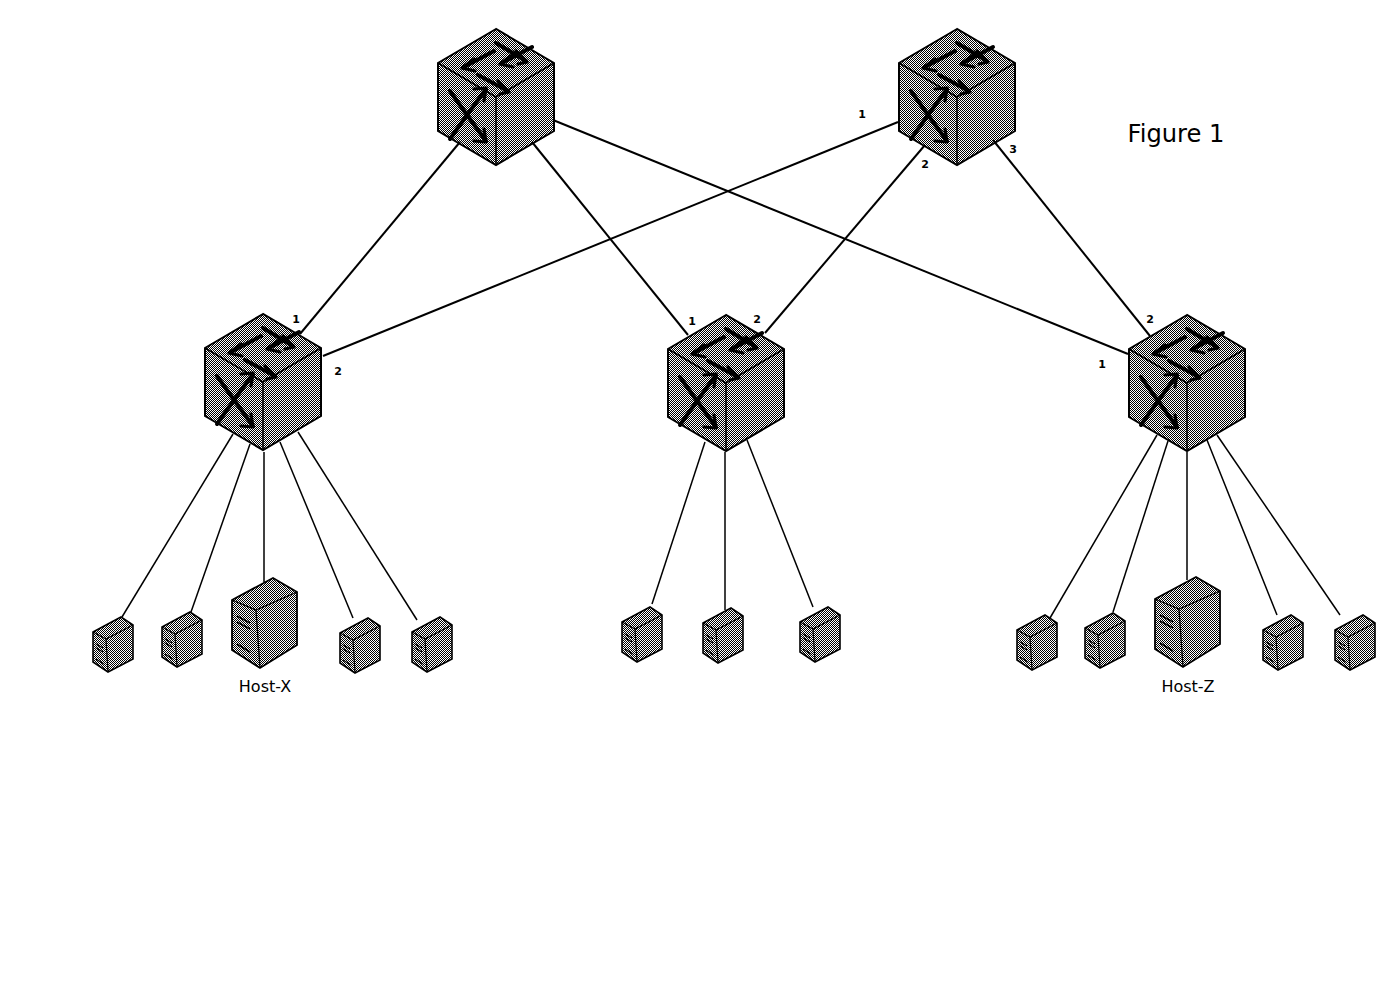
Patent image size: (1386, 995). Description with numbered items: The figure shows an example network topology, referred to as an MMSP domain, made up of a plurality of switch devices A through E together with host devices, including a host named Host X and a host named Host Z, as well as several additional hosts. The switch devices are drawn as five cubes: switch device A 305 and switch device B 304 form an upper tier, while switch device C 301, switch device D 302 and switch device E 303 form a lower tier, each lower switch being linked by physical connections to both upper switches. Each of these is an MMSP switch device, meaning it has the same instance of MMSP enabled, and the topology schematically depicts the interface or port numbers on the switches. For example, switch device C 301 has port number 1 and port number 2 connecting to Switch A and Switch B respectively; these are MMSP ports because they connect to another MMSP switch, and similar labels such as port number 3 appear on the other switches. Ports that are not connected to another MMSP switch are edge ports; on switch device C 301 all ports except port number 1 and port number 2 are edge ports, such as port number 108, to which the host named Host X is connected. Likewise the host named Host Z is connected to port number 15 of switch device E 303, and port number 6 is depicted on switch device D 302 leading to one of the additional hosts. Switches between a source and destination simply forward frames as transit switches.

The switch device A 305 is at (490, 84).
The switch device B 304 is at (957, 82).
The switch device C 301 is at (263, 373).
The switch device D 302 is at (726, 368).
The switch device E 303 is at (1187, 373).
The port number 1 is at (380, 238).
The port number 2 is at (605, 238).
The port number 3 is at (840, 231).
The port number 108 is at (264, 560).
The port number 6 is at (723, 557).
The port number 15 is at (1187, 559).